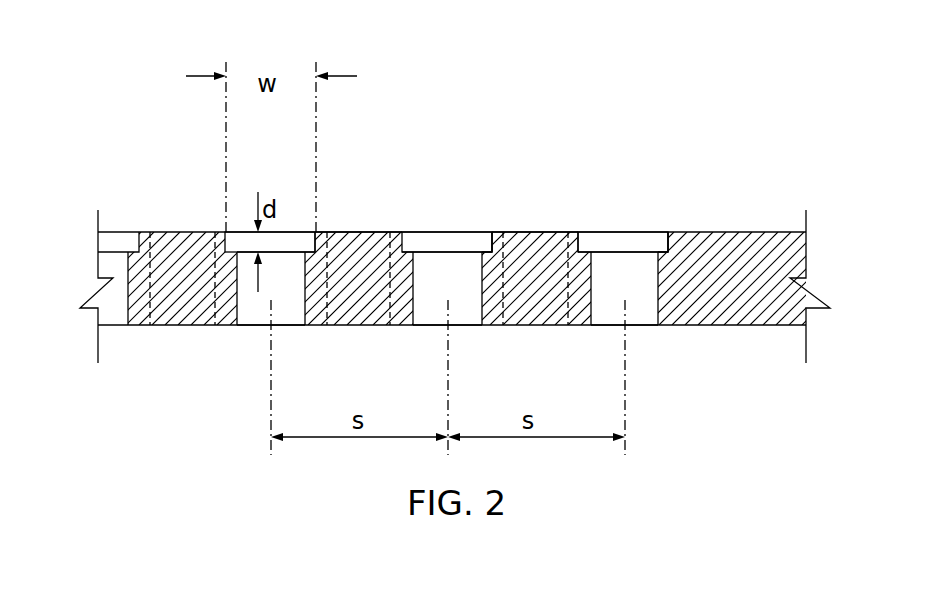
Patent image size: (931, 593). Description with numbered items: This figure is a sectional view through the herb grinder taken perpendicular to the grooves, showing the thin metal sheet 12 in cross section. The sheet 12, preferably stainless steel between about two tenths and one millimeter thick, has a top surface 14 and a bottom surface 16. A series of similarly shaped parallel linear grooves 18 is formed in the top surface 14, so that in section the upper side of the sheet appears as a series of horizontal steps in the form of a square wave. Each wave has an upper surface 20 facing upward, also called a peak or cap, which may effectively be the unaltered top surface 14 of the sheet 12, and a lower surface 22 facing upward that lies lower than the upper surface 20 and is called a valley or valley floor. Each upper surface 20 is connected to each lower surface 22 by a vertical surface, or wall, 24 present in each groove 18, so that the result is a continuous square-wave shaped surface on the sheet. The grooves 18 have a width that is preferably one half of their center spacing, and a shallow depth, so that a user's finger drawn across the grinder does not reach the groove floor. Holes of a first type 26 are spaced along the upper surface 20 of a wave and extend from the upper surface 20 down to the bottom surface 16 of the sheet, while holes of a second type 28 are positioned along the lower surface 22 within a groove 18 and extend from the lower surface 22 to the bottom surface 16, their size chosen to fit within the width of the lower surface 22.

The thin metal sheet 12 is at (771, 312).
The top surface 14 is at (767, 232).
The bottom surface 16 is at (726, 325).
The grooves 18 is at (419, 240).
The upper surface 20 is at (376, 232).
The lower surface 22 is at (450, 244).
The vertical surface 24 is at (489, 234).
The first type hole 26 is at (160, 308).
The second type hole 28 is at (237, 298).